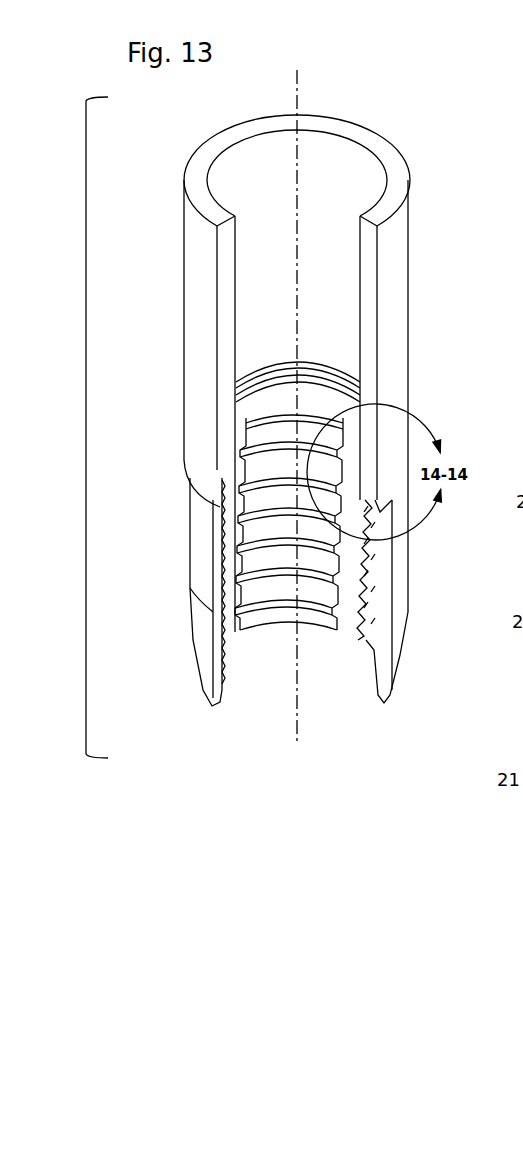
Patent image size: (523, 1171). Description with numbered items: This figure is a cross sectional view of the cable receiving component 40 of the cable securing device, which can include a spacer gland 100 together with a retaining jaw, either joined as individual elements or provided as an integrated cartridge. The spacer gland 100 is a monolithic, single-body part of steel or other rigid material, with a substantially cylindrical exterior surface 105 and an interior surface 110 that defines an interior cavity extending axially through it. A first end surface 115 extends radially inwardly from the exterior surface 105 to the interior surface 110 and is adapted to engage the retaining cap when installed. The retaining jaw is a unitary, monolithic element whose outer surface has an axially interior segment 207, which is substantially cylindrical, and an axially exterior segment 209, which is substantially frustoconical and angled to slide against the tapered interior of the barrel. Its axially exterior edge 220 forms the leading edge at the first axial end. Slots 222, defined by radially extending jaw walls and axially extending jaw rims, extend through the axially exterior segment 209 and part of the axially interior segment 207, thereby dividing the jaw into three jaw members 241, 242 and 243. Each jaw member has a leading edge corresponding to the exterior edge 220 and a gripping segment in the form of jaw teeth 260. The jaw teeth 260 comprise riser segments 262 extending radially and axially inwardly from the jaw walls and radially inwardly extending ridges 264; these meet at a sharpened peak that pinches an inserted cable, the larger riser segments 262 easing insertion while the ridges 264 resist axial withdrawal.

The cable receiving component 40 is at (86, 428).
The spacer gland 100 is at (410, 288).
The exterior surface 105 is at (200, 320).
The interior surface 110 is at (344, 150).
The first end surface 115 is at (402, 173).
The axially interior segment 207 is at (187, 521).
The axially exterior segment 209 is at (194, 654).
The exterior edge 220 is at (205, 712).
The slots 222 is at (239, 657).
The jaw member 241 is at (177, 683).
The jaw member 242 is at (314, 646).
The jaw member 243 is at (421, 627).
The jaw teeth 260 is at (270, 425).
The riser segments 262 is at (216, 569).
The ridges 264 is at (216, 553).